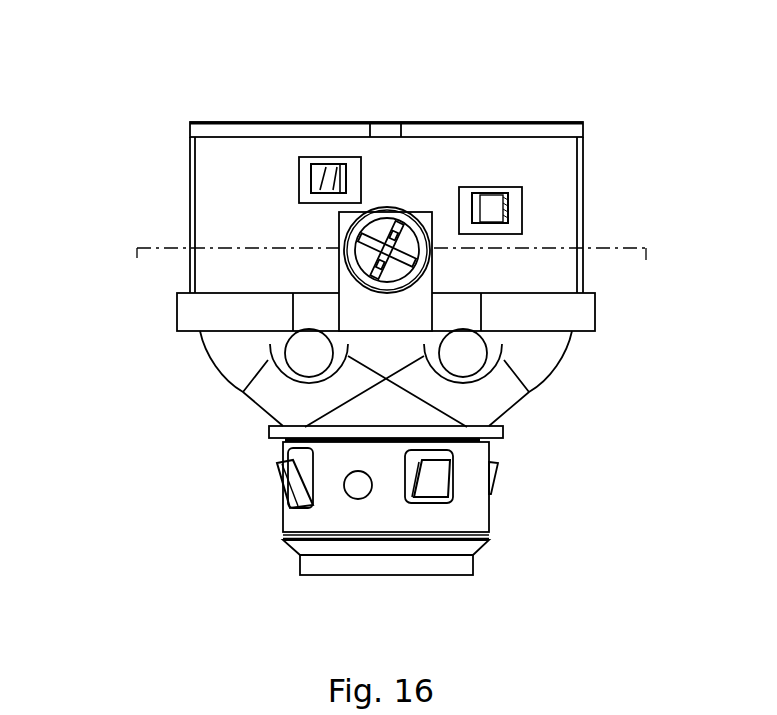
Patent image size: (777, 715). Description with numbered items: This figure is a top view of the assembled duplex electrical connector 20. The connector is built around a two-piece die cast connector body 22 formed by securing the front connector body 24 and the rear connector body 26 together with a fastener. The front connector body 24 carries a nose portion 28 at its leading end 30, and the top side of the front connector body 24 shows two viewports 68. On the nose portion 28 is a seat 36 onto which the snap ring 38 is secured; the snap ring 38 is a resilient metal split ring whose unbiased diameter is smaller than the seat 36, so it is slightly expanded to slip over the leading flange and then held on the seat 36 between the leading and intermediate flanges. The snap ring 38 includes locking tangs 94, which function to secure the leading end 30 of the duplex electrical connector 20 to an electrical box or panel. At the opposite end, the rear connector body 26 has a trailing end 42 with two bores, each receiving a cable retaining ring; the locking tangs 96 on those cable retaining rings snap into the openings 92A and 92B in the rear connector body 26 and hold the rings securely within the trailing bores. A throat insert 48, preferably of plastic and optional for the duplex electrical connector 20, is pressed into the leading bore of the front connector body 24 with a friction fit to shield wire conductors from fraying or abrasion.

The duplex electrical connector 20 is at (102, 114).
The two-piece die cast connector body 22 is at (391, 280).
The front connector body 24 is at (553, 375).
The rear connector body 26 is at (583, 180).
The nose portion 28 is at (358, 542).
The leading end 30 is at (387, 555).
The seat 36 is at (273, 442).
The snap ring 38 is at (489, 517).
The trailing end 42 is at (538, 123).
The throat insert 48 is at (475, 563).
The viewports 68 is at (309, 353).
The opening 92A is at (483, 188).
The opening 92B is at (322, 203).
The locking tangs 94 is at (438, 472).
The locking tangs 96 is at (339, 163).